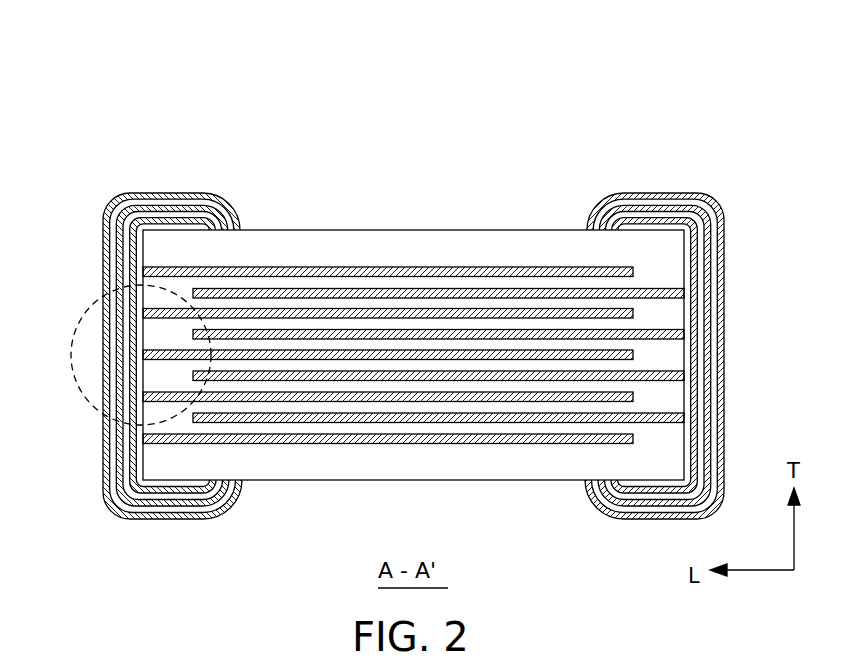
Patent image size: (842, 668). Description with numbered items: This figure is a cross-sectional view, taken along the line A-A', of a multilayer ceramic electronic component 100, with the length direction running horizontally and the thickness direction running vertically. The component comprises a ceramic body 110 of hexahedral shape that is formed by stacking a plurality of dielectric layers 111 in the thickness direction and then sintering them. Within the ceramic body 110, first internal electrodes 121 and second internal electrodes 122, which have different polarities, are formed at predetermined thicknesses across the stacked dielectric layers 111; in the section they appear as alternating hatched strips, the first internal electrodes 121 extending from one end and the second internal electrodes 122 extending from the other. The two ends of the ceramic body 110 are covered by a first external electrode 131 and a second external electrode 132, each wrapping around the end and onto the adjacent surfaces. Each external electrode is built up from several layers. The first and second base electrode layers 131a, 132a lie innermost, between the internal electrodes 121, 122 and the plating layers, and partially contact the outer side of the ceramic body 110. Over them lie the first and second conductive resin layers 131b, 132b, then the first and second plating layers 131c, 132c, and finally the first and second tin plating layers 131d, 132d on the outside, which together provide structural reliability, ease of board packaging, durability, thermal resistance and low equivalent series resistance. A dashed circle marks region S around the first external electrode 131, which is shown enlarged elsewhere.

The multilayer ceramic electronic component 100 is at (435, 39).
The ceramic body 110 is at (470, 228).
The dielectric layer 111 is at (370, 285).
The first internal electrode 121 is at (322, 267).
The second internal electrode 122 is at (433, 288).
The first external electrode 131 is at (164, 301).
The first base electrode layer 131a is at (216, 310).
The first conductive resin layer 131b is at (193, 193).
The first plating layer 131c is at (134, 193).
The first tin plating layer 131d is at (103, 243).
The second external electrode 132 is at (662, 301).
The second base electrode layer 132a is at (610, 310).
The second conductive resin layer 132b is at (647, 313).
The second plating layer 132c is at (658, 319).
The second tin plating layer 132d is at (690, 326).
The region S is at (73, 358).